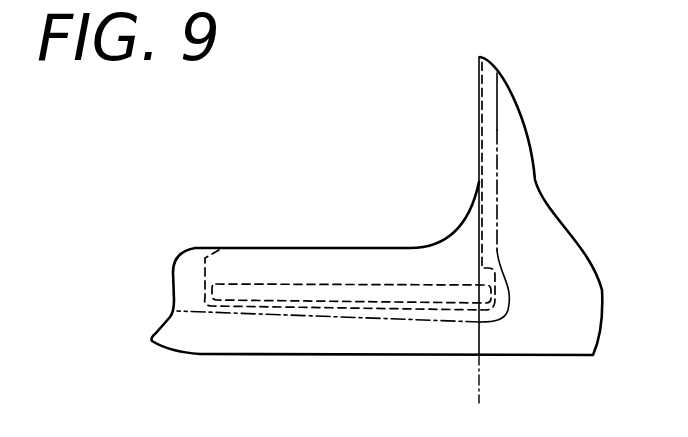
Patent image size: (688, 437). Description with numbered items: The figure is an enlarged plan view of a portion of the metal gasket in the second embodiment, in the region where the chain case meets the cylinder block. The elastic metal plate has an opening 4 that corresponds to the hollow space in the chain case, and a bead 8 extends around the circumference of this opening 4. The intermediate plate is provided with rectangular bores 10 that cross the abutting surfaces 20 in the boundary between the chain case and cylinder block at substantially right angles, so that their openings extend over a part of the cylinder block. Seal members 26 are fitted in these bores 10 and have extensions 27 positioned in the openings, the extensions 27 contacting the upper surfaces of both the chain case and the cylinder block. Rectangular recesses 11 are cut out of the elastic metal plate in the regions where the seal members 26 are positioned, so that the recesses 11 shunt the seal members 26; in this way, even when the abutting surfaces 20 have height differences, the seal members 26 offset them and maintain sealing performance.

The opening 4 is at (323, 248).
The bead 8 is at (498, 228).
The rectangular bores 10 is at (266, 299).
The rectangular recesses 11 is at (219, 250).
The abutting surfaces 20 is at (475, 377).
The seal members 26 is at (335, 293).
The extensions 27 is at (503, 310).